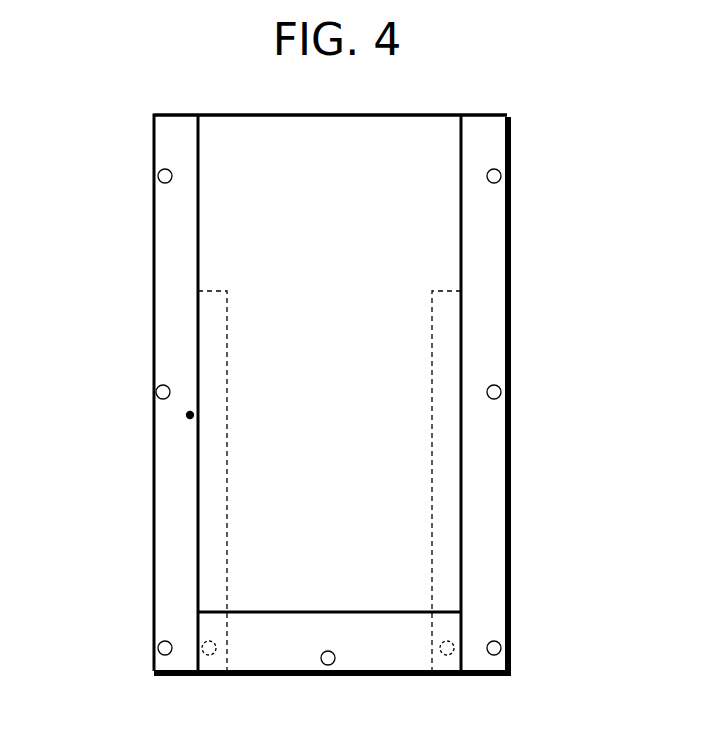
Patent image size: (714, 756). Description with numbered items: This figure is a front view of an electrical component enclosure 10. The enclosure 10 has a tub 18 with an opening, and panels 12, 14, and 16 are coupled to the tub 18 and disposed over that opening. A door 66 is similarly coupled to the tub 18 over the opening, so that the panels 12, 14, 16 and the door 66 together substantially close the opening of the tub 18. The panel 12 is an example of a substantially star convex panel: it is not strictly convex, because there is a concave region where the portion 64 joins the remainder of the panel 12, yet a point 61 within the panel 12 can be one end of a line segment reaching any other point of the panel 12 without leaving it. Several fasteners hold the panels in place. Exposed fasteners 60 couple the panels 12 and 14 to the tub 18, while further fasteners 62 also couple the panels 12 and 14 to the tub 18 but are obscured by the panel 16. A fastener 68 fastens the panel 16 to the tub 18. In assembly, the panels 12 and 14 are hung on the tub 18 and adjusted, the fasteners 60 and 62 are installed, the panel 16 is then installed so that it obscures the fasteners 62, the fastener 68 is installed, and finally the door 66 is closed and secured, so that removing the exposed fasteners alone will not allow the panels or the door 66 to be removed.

The enclosure 10 is at (108, 128).
The panel 12 is at (168, 355).
The panel 14 is at (490, 363).
The panel 16 is at (373, 657).
The tub 18 is at (268, 114).
The fasteners 60 is at (158, 178).
The point 61 is at (186, 417).
The fasteners 62 is at (209, 655).
The portion 64 is at (228, 465).
The door 66 is at (316, 329).
The fastener 68 is at (326, 665).